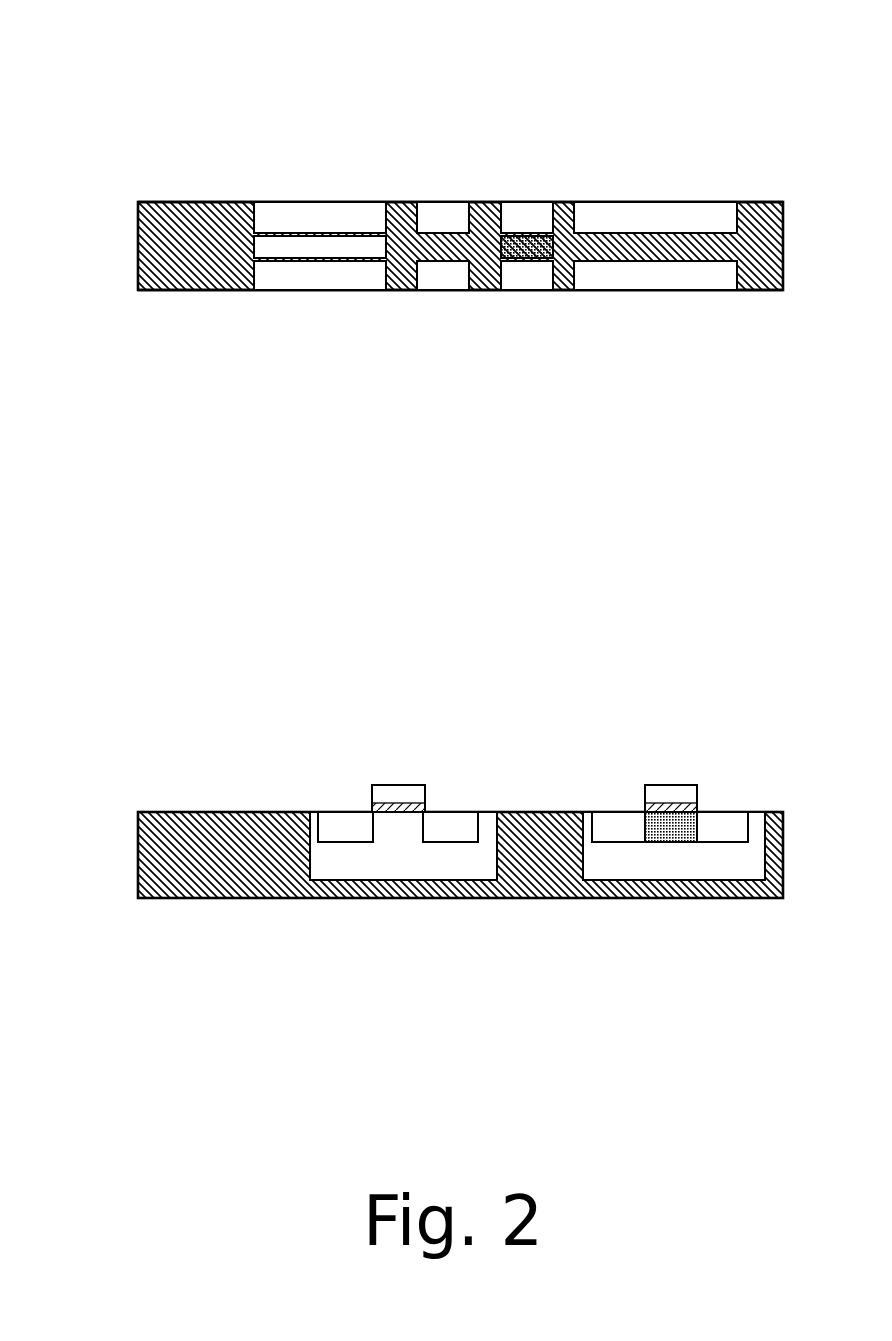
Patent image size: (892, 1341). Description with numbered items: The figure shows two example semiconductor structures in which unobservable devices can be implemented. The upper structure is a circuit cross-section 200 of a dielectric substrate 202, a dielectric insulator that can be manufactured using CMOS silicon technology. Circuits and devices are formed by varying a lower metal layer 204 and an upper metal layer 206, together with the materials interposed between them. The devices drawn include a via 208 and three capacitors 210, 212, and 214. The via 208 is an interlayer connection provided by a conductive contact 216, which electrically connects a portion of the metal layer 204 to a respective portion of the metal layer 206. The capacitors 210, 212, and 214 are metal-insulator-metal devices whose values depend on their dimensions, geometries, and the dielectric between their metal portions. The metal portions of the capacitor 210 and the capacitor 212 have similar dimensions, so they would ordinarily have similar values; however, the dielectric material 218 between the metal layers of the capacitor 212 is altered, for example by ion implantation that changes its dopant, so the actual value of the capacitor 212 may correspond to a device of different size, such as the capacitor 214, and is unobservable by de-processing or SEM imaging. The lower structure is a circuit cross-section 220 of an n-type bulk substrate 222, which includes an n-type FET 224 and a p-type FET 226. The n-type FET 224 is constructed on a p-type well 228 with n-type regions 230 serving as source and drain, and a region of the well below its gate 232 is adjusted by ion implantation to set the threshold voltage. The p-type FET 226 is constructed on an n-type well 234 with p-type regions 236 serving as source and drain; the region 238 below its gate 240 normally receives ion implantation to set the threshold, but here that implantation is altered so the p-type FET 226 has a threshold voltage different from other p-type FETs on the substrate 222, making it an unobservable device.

The circuit cross-section 200 is at (135, 48).
The dielectric substrate 202 is at (221, 202).
The metal layer 204 is at (128, 288).
The metal layer 206 is at (128, 232).
The via 208 is at (266, 217).
The capacitor 210 is at (470, 190).
The capacitor 212 is at (473, 206).
The capacitor 214 is at (737, 190).
The conductive contact 216 is at (254, 247).
The dielectric material 218 is at (502, 248).
The circuit cross-section 220 is at (135, 638).
The n-type bulk substrate 222 is at (221, 812).
The n-type FET 224 is at (373, 779).
The p-type FET 226 is at (665, 779).
The p-type well 228 is at (412, 880).
The n-type regions 230 is at (423, 825).
The gate 232 is at (369, 774).
The n-type well 234 is at (697, 880).
The p-type regions 236 is at (708, 842).
The region 238 is at (697, 827).
The gate 240 is at (636, 774).